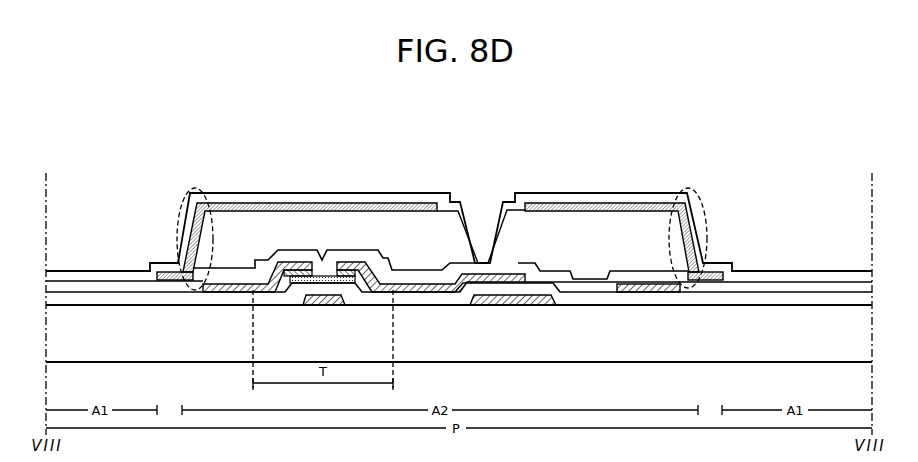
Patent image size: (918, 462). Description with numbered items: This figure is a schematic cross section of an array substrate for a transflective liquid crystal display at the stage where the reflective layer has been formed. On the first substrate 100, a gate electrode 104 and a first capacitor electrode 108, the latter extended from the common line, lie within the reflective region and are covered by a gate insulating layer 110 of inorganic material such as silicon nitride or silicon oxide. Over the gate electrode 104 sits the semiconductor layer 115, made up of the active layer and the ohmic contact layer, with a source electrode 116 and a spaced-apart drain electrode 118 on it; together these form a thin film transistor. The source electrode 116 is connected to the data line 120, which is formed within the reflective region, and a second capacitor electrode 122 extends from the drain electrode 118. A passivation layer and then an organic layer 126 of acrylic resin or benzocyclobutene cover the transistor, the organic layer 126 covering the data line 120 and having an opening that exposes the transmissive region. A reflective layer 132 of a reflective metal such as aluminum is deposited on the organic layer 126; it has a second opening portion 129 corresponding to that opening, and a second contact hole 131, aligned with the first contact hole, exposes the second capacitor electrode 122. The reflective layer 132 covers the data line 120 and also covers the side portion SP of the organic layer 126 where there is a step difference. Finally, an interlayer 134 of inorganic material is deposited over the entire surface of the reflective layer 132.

The first substrate 100 is at (836, 353).
The gate electrode 104 is at (325, 306).
The first capacitor electrode 108 is at (548, 292).
The gate insulating layer 110 is at (768, 298).
The semiconductor layer 115 is at (290, 266).
The source electrode 116 is at (300, 276).
The drain electrode 118 is at (355, 262).
The data line 120 is at (187, 270).
The second capacitor electrode 122 is at (502, 270).
The organic layer 126 is at (637, 217).
The second opening portion 129 is at (82, 238).
The second contact hole 131 is at (485, 204).
The reflective layer 132 is at (338, 203).
The interlayer 134 is at (668, 194).
The side portion SP is at (178, 222).